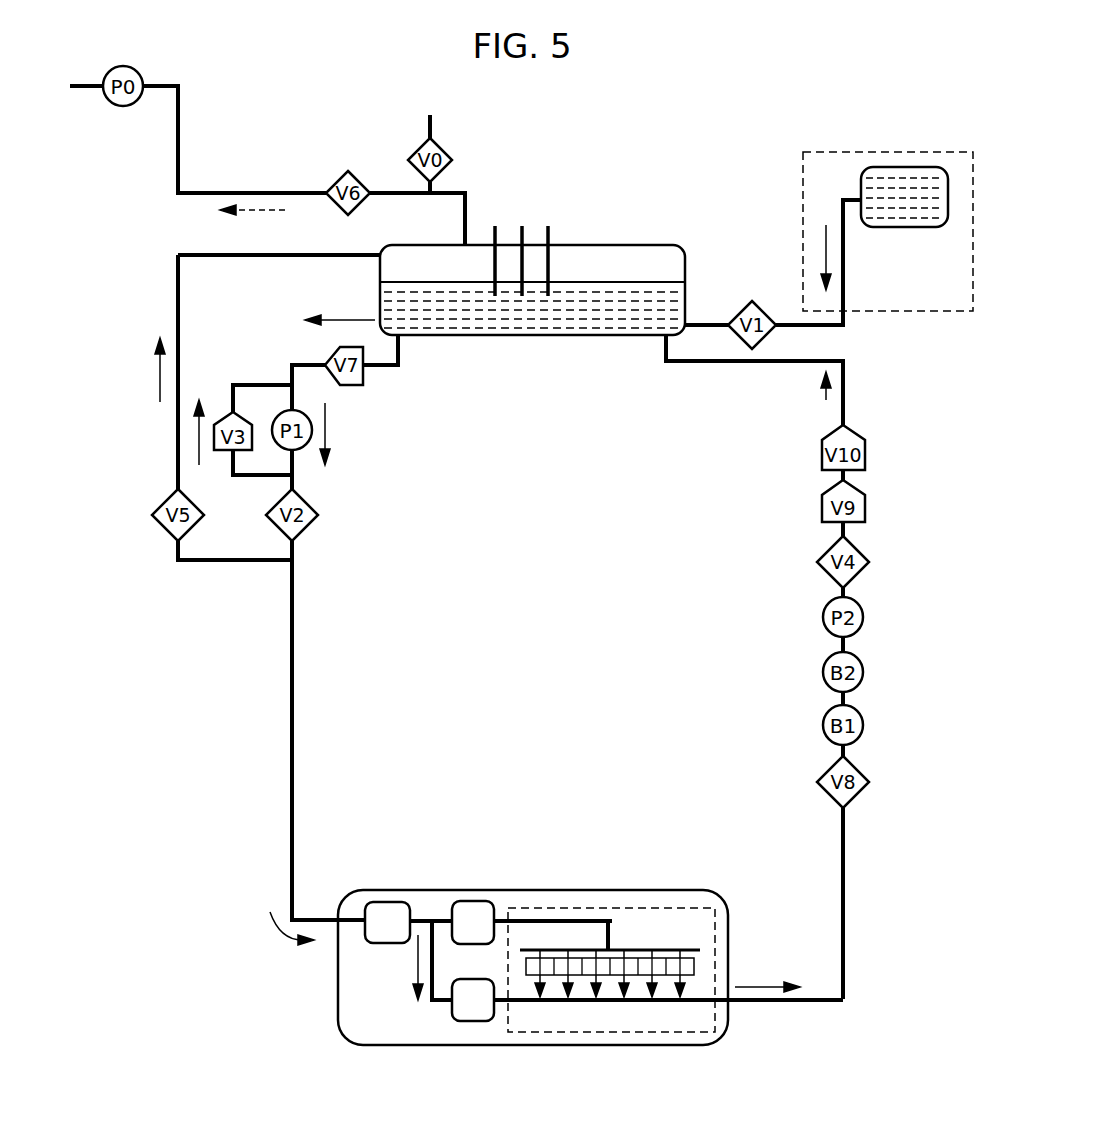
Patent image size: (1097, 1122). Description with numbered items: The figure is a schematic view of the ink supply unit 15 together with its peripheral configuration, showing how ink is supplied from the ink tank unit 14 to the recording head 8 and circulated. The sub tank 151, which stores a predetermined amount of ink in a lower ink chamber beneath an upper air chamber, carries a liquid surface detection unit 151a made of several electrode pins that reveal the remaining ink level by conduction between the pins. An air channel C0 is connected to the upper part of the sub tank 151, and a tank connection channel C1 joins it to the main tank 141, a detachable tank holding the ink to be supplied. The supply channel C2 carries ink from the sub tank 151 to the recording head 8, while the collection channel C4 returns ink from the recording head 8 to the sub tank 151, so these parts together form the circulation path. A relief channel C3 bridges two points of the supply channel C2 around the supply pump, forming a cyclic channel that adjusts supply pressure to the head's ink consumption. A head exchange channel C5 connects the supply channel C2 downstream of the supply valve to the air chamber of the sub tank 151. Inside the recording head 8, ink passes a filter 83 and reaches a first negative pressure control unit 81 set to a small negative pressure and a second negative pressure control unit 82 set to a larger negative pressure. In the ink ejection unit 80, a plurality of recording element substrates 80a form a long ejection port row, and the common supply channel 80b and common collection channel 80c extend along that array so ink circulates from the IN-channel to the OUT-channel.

The recording head 8 is at (645, 890).
The ink ejection unit 80 is at (661, 1033).
The recording element substrates 80a is at (694, 968).
The common supply channel 80b is at (568, 921).
The common collection channel 80c is at (565, 1002).
The first negative pressure control unit 81 is at (470, 901).
The second negative pressure control unit 82 is at (472, 1022).
The filter 83 is at (386, 902).
The ink tank unit 14 is at (888, 270).
The main tank 141 is at (900, 228).
The ink supply unit 15 is at (112, 122).
The sub tank 151 is at (530, 338).
The liquid surface detection unit 151a is at (488, 225).
The air channel C0 is at (258, 193).
The tank connection channel C1 is at (717, 323).
The supply channel C2 is at (383, 368).
The relief channel C3 is at (240, 478).
The collection channel C4 is at (703, 363).
The head exchange channel C5 is at (239, 258).